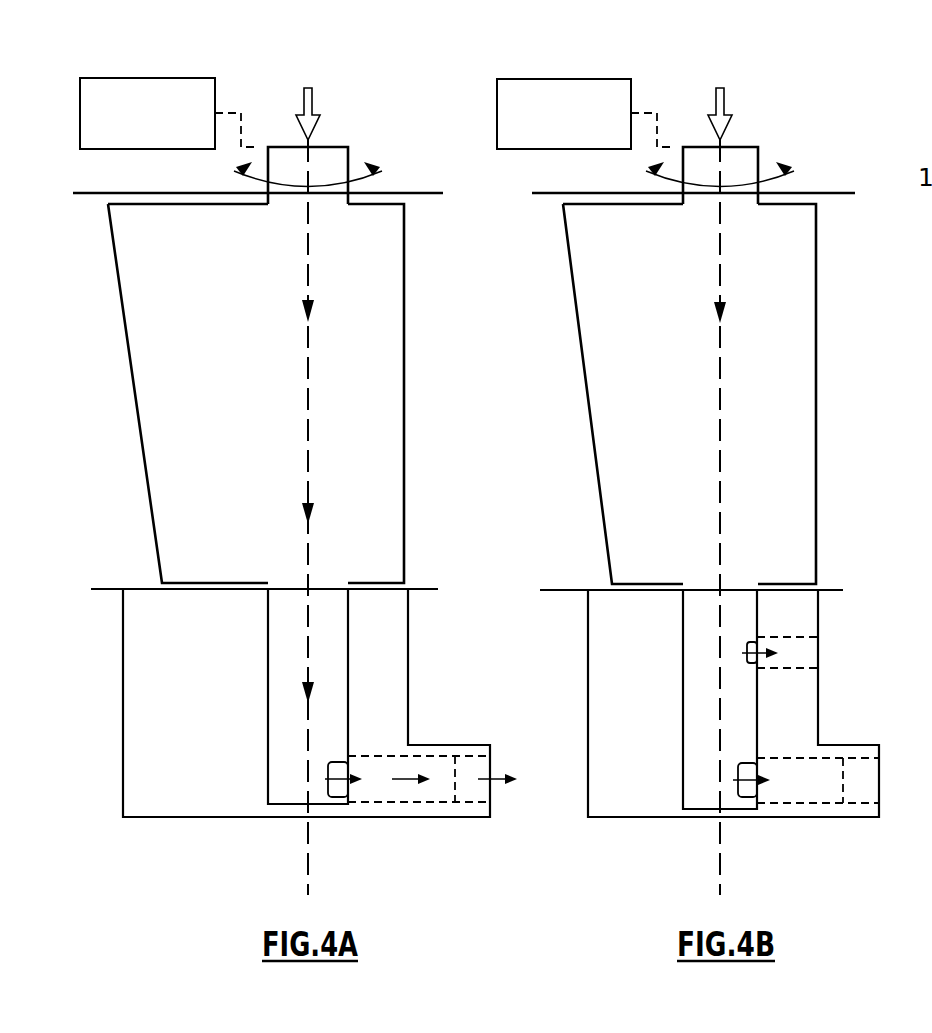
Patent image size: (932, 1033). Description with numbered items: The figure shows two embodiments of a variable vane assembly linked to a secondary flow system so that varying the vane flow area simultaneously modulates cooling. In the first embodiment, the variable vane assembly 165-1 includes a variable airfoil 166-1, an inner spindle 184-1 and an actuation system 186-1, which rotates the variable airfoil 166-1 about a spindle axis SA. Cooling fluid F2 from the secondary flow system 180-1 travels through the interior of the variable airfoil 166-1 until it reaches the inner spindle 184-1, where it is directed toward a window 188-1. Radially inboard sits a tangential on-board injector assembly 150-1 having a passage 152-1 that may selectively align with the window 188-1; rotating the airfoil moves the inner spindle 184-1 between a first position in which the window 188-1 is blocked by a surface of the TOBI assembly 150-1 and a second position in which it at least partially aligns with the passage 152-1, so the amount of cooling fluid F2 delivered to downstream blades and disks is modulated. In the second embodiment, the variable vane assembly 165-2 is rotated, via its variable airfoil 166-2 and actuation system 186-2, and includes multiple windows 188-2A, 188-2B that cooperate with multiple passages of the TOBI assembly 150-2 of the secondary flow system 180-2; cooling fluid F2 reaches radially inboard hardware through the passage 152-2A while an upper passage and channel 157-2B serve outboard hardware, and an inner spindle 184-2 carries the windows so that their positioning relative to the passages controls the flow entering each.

In FIG. 4A, the actuation system 186-1 is at (130, 150).
In FIG. 4A, the variable vane assembly 165-1 is at (416, 312).
In FIG. 4A, the variable airfoil 166-1 is at (242, 313).
In FIG. 4A, the spindle axis SA is at (309, 408).
In FIG. 4B, the spindle axis SA is at (721, 410).
In FIG. 4A, the cooling fluid F2 is at (313, 101).
In FIG. 4B, the cooling fluid F2 is at (725, 101).
In FIG. 4A, the secondary flow system 180-1 is at (418, 718).
In FIG. 4A, the inner spindle 184-1 is at (349, 668).
In FIG. 4A, the passage 152-1 is at (376, 793).
In FIG. 4A, the window 188-1 is at (328, 788).
In FIG. 4A, the tangential on-board injector (TOBI) assembly 150-1 is at (173, 817).
In FIG. 4B, the actuation system 186-2 is at (546, 150).
In FIG. 4B, the variable vane assembly 165-2 is at (815, 172).
In FIG. 4B, the variable airfoil 166-2 is at (683, 313).
In FIG. 4B, the secondary flow system 180-2 is at (572, 655).
In FIG. 4B, the bore 184-2 is at (720, 699).
In FIG. 4B, the upper fluid channel 157-2B is at (812, 660).
In FIG. 4B, the window 188-2B is at (735, 648).
In FIG. 4B, the passage 152-2A is at (833, 794).
In FIG. 4B, the window 188-2A is at (718, 792).
In FIG. 4B, the tangential on-board injector (TOBI) assembly 150-2 is at (612, 817).